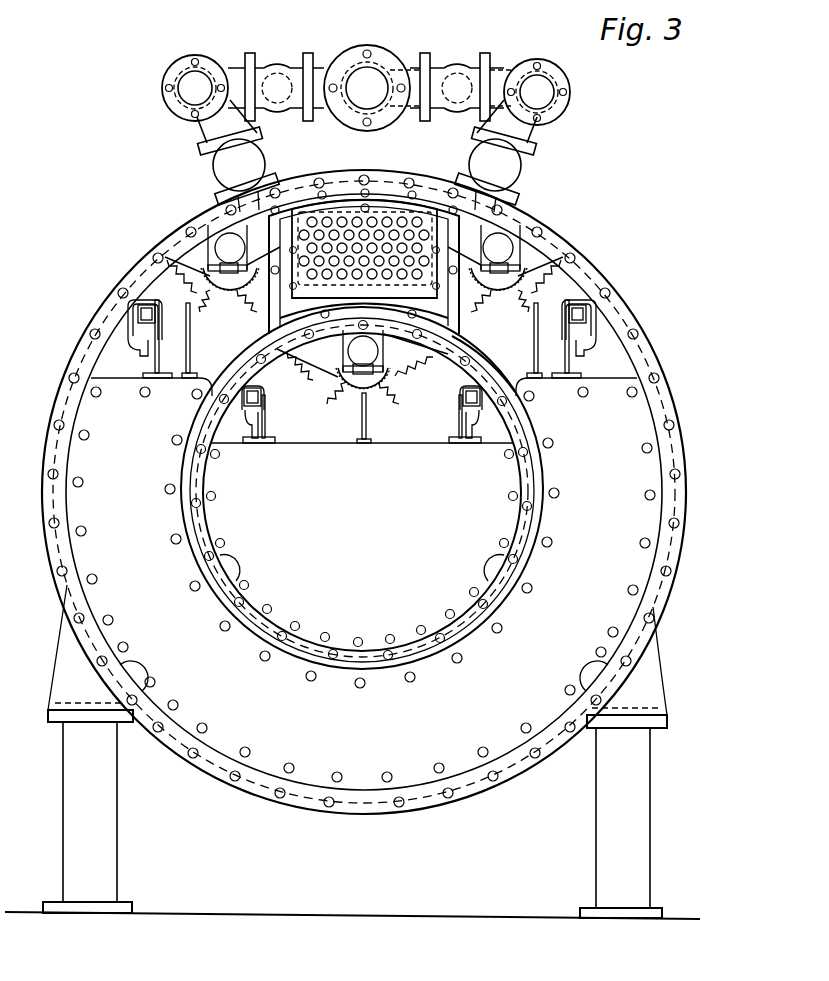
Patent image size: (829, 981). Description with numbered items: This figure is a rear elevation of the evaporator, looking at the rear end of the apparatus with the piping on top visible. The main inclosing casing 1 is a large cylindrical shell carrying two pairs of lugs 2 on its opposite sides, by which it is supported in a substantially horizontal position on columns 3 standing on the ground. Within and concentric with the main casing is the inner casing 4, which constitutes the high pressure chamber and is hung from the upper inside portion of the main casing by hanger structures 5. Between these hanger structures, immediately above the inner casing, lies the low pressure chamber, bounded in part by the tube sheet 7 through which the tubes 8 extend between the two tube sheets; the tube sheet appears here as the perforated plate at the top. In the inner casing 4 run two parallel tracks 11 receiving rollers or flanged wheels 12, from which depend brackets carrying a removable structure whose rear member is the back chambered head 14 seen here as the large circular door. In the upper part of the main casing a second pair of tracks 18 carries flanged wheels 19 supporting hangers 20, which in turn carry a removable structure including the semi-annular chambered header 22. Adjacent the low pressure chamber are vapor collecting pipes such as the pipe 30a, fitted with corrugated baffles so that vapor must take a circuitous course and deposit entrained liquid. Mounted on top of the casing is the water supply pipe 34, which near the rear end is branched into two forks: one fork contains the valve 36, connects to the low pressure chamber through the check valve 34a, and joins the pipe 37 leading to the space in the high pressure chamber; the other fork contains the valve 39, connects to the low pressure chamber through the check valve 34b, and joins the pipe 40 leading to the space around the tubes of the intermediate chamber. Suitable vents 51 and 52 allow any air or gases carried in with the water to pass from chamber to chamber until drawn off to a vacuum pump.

The main inclosing casing 1 is at (650, 365).
The lugs 2 is at (678, 677).
The columns 3 is at (93, 783).
The inner casing 4 is at (484, 374).
The hanger structures 5 is at (269, 327).
The tube sheet 7 is at (290, 290).
The tubes 8 is at (330, 276).
The tracks 11 is at (266, 422).
The rollers or flanged wheels 12 is at (264, 398).
The back chambered head 14 is at (362, 488).
The second pair of tracks 18 is at (134, 340).
The flanged wheels 19 is at (145, 308).
The hangers 20 is at (159, 350).
The semi-annular chambered header 22 is at (364, 585).
The vapor collecting pipe 30a is at (230, 248).
The water supply pipe 34 is at (370, 88).
The check valve 34a is at (500, 170).
The check valve 34b is at (228, 163).
The valve 36 is at (457, 88).
The pipe 37 is at (545, 97).
The valve 39 is at (283, 85).
The pipe 40 is at (190, 85).
The vent 51 is at (366, 428).
The vent 52 is at (190, 330).